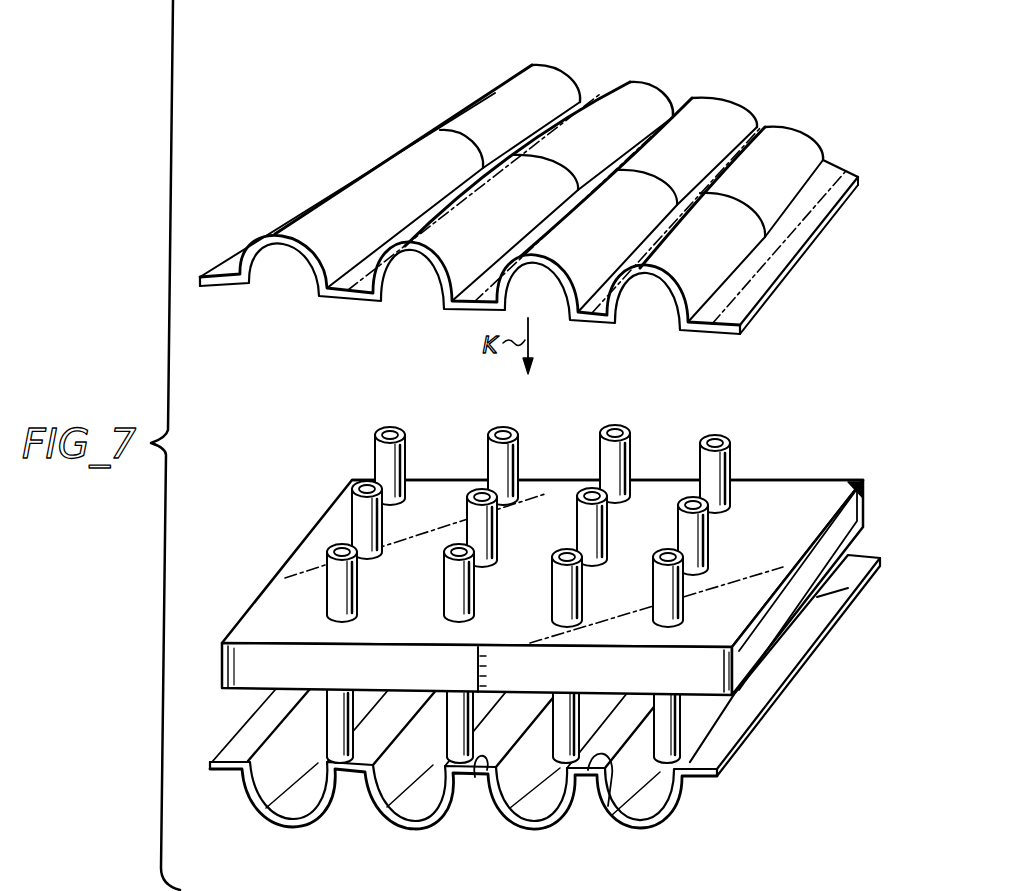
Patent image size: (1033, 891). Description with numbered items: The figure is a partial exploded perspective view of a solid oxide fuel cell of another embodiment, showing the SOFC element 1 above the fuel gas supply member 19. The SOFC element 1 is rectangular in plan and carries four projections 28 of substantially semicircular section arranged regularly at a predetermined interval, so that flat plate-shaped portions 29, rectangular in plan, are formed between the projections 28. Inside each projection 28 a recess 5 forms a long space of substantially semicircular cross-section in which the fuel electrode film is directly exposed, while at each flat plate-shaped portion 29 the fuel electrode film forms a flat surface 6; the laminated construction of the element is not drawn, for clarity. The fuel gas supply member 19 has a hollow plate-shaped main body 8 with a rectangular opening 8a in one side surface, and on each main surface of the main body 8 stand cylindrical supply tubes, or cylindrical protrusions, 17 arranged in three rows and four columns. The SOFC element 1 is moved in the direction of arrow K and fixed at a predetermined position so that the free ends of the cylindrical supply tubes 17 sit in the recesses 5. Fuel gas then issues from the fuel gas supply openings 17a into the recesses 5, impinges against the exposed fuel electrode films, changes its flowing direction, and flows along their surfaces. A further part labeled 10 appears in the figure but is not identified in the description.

The SOFC element 1 is at (475, 90).
The recess 5 is at (270, 262).
The flat surface 6 is at (477, 780).
The plate-shaped main body 8 is at (794, 478).
The rectangular opening 8a is at (853, 477).
The flat portion 10 is at (447, 130).
The cylindrical supply tubes 17 is at (327, 716).
The fuel gas supply openings 17a is at (607, 430).
The fuel gas supply member 19 is at (824, 470).
The projections 28 is at (555, 78).
The flat plate-shaped portions 29 is at (350, 290).